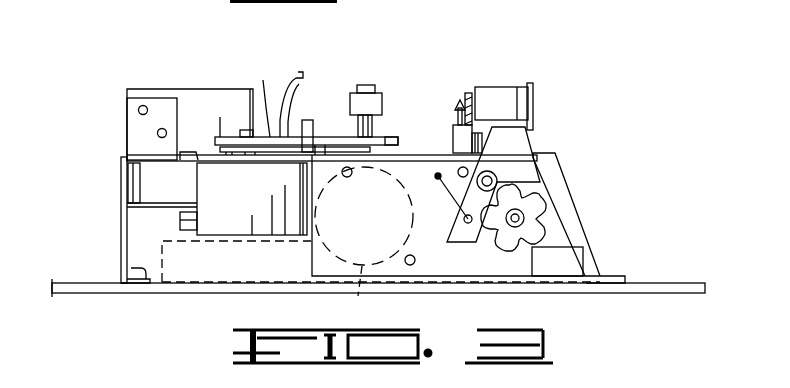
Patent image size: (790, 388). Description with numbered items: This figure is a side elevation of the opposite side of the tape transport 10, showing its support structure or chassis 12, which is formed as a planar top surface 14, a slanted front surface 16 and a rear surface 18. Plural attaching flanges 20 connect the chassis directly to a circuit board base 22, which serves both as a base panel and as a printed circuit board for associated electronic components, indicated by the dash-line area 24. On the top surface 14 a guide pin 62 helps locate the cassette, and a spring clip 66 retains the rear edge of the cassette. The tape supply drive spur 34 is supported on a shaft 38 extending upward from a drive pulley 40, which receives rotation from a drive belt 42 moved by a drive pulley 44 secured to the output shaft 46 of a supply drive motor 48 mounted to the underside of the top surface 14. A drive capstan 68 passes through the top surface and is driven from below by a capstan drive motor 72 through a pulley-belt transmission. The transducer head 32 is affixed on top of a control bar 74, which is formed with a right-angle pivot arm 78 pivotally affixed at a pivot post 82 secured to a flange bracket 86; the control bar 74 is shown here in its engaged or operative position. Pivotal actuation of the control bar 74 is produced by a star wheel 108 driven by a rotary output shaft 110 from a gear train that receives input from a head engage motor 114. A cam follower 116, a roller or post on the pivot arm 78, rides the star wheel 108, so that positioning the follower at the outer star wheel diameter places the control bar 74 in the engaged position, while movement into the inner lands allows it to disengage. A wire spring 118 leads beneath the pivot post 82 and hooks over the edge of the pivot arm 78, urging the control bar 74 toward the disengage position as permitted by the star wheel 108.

The tape transport 10 is at (432, 70).
The chassis 12 is at (400, 153).
The top surface 14 is at (180, 151).
The slanted front surface 16 is at (560, 184).
The rear surface 18 is at (120, 178).
The attaching flanges 20 is at (126, 269).
The circuit board base 22 is at (571, 293).
The dash-line area 24 is at (246, 272).
The transducer head 32 is at (493, 90).
The tape supply drive spur 34 is at (362, 97).
The shaft 38 is at (372, 128).
The drive pulley 40 is at (340, 137).
The drive belt 42 is at (341, 176).
The drive pulley 44 is at (257, 98).
The output shaft 46 is at (246, 130).
The supply drive motor 48 is at (250, 185).
The guide pin 62 is at (457, 118).
The spring clip 66 is at (297, 68).
The drive capstan 68 is at (465, 98).
The capstan drive motor 72 is at (205, 112).
The control bar 74 is at (528, 136).
The pivot arm 78 is at (456, 204).
The pivot post 82 is at (464, 221).
The flange bracket 86 is at (374, 226).
The star wheel 108 is at (535, 217).
The rotary output shaft 110 is at (511, 224).
The head engage motor 114 is at (356, 297).
The cam follower 116 is at (502, 162).
The wire spring 118 is at (438, 173).